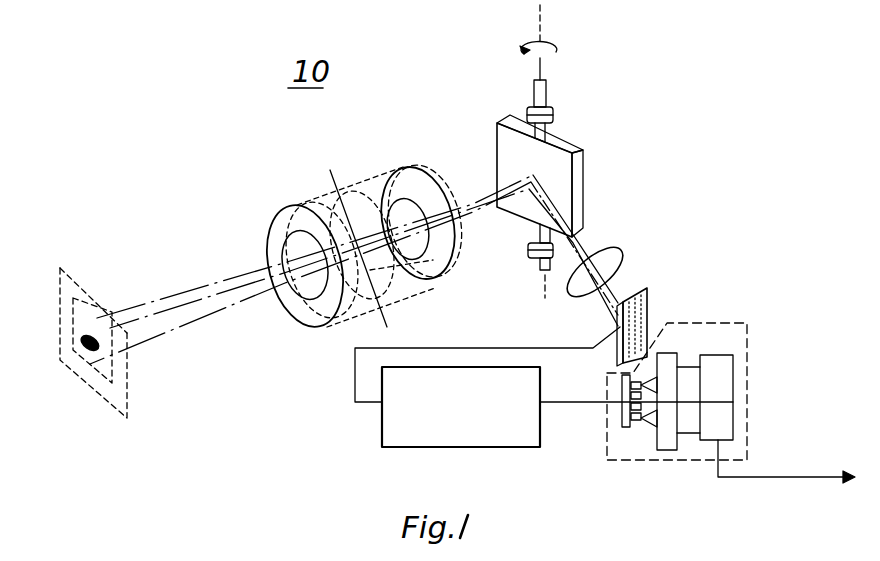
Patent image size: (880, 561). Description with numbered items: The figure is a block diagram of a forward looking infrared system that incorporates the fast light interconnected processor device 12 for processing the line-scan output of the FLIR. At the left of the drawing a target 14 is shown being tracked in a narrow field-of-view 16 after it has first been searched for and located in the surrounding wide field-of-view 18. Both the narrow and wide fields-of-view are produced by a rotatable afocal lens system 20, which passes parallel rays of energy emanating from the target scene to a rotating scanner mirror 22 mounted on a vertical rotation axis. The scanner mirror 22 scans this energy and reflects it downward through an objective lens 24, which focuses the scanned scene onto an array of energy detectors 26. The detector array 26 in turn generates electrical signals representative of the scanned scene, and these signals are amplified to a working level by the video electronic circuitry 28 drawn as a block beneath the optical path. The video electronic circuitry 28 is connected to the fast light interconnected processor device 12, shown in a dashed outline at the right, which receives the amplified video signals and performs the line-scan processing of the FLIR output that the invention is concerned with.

The fast light interconnected processor (FLIP) device 12 is at (737, 323).
The target 14 is at (92, 350).
The narrow field-of-view 16 is at (88, 313).
The wide field-of-view 18 is at (72, 275).
The rotatable afocal lens system 20 is at (270, 220).
The rotating scanner mirror 22 is at (475, 179).
The objective lens 24 is at (617, 257).
The array of energy detectors 26 is at (650, 289).
The video electronic circuitry 28 is at (382, 428).